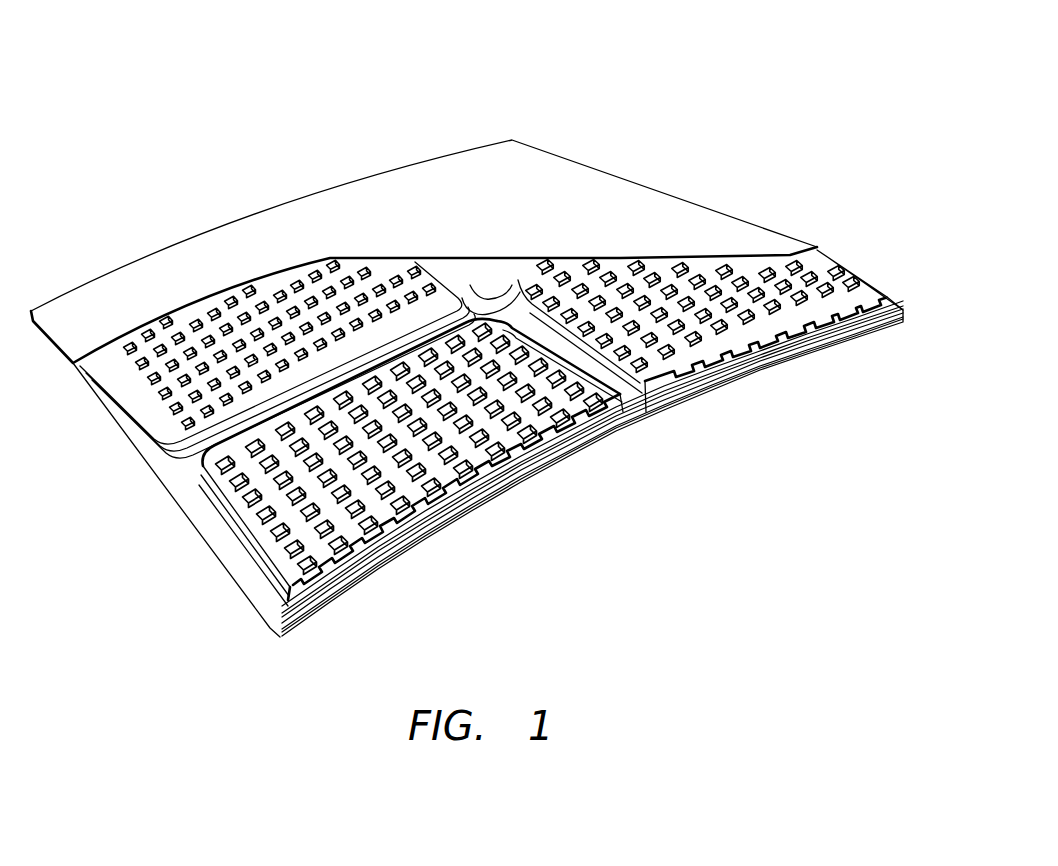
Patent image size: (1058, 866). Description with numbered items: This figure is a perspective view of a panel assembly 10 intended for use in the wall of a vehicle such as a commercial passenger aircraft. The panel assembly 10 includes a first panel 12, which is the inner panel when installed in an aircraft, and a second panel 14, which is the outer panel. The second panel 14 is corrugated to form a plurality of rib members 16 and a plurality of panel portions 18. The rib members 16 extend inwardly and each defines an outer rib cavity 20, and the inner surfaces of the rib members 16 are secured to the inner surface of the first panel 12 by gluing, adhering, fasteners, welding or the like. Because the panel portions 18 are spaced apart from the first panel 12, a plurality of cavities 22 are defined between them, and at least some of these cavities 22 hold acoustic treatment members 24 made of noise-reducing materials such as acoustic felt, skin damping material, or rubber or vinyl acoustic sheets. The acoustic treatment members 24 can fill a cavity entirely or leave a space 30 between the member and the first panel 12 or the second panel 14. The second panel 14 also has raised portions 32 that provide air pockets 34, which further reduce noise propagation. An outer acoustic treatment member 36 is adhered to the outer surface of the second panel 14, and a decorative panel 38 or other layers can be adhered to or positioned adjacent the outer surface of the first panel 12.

The panel assembly 10 is at (150, 98).
The first panel 12 is at (283, 627).
The second panel 14 is at (277, 550).
The rib members 16 is at (515, 322).
The panel portions 18 is at (770, 282).
The outer rib cavity 20 is at (283, 403).
The cavities 22 is at (860, 320).
The acoustic treatment members 24 is at (727, 364).
The space 30 is at (790, 345).
The raised portions 32 is at (280, 530).
The air pockets 34 is at (423, 523).
The outer acoustic treatment member 36 is at (305, 210).
The decorative panel 38 is at (687, 400).